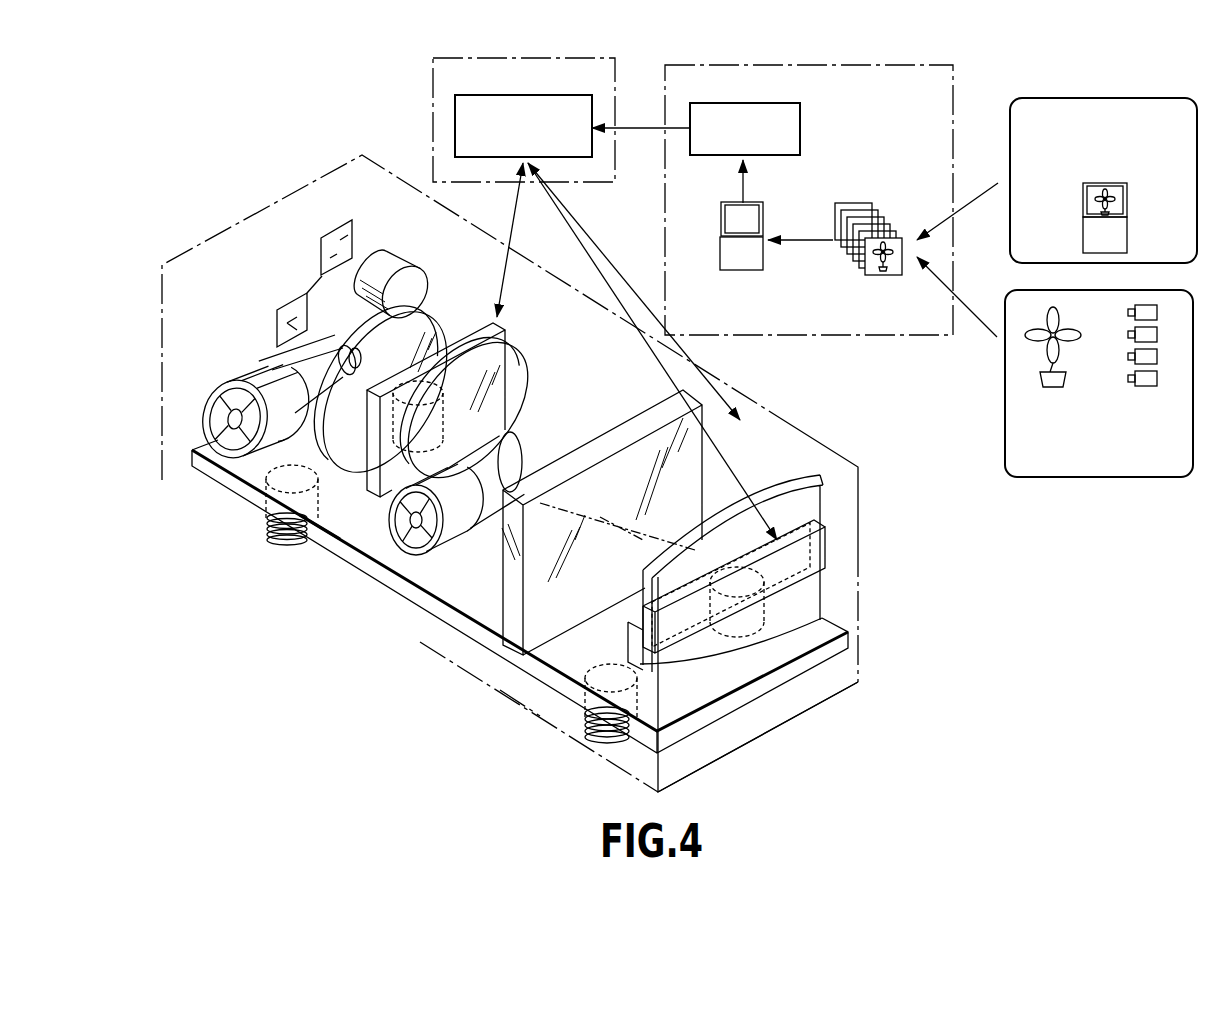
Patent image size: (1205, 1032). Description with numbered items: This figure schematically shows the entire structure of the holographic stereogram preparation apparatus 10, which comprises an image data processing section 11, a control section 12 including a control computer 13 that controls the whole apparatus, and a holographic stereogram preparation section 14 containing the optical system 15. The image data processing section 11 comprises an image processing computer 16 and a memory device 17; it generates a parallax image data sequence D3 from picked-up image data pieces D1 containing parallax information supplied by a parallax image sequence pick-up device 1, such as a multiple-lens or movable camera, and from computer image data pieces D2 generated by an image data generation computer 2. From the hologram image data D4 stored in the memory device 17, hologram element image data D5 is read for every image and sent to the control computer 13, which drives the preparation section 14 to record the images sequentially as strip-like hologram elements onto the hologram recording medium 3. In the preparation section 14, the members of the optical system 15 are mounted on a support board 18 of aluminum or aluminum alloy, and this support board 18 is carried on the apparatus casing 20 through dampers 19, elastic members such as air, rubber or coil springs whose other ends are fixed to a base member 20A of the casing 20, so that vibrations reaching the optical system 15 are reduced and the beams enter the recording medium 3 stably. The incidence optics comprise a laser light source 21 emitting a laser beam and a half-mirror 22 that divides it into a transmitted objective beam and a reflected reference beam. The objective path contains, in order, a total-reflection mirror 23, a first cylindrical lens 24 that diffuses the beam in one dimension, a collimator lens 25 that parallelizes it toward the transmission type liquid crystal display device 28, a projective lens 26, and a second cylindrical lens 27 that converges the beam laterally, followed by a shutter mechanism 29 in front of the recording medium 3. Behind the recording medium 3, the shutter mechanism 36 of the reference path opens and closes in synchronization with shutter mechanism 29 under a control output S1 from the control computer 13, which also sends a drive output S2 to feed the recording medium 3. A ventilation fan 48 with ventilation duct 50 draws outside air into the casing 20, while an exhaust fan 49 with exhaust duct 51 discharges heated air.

The parallax image sequence pick-up device 1 is at (1113, 477).
The image data generation computer 2 is at (1125, 97).
The hologram recording medium 3 is at (747, 667).
The holographic stereogram preparation apparatus 10 is at (263, 61).
The image data processing section 11 is at (955, 93).
The control section 12 is at (430, 80).
The control computer 13 is at (517, 94).
The holographic stereogram preparation section 14 is at (388, 645).
The optical system 15 is at (353, 457).
The image processing computer 16 is at (722, 228).
The memory device 17 is at (800, 117).
The support board 18 is at (807, 663).
The damper 19 is at (273, 540).
The apparatus casing 20 is at (860, 548).
The base member 20A is at (742, 748).
The laser light source 21 is at (386, 250).
The half-mirror 22 is at (325, 232).
The total-reflection mirror 23 is at (277, 303).
The first cylindrical lens 24 is at (300, 440).
The collimator lens 25 is at (363, 437).
The projective lens 26 is at (503, 383).
The second cylindrical lens 27 is at (503, 592).
The transmission type liquid crystal display device 28 is at (375, 497).
The shutter mechanism 29 is at (524, 692).
The shutter mechanism 36 is at (683, 640).
The ventilation fan 48 is at (236, 419).
The exhaust fan 49 is at (430, 560).
The ventilation duct 50 is at (250, 360).
The exhaust duct 51 is at (478, 585).
The picked-up image data pieces D1 is at (970, 313).
The computer image data pieces D2 is at (975, 197).
The parallax image data sequence D3 is at (862, 203).
The hologram image data D4 is at (745, 188).
The hologram element image data D5 is at (643, 127).
The control output S1 is at (645, 350).
The drive output S2 is at (727, 390).